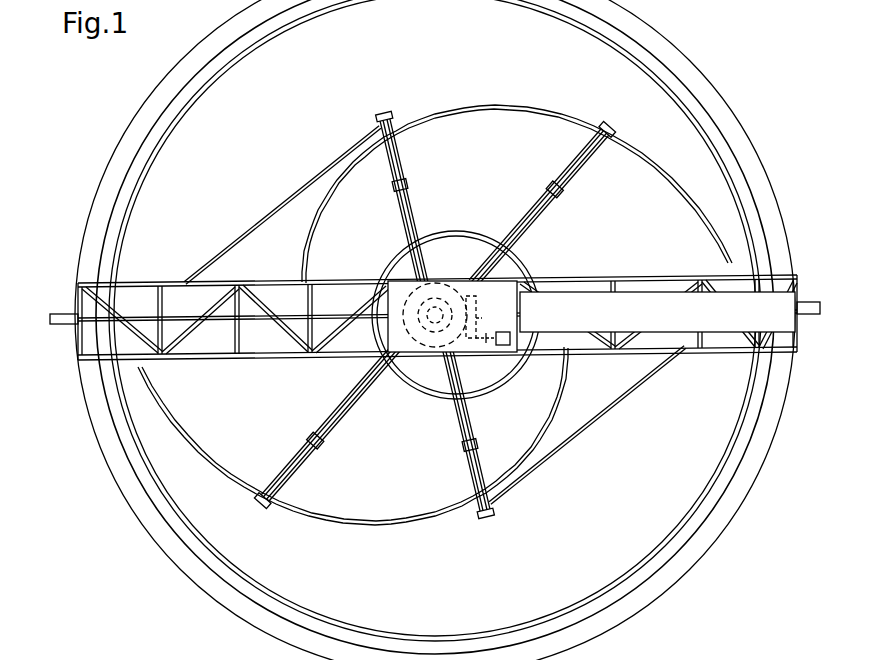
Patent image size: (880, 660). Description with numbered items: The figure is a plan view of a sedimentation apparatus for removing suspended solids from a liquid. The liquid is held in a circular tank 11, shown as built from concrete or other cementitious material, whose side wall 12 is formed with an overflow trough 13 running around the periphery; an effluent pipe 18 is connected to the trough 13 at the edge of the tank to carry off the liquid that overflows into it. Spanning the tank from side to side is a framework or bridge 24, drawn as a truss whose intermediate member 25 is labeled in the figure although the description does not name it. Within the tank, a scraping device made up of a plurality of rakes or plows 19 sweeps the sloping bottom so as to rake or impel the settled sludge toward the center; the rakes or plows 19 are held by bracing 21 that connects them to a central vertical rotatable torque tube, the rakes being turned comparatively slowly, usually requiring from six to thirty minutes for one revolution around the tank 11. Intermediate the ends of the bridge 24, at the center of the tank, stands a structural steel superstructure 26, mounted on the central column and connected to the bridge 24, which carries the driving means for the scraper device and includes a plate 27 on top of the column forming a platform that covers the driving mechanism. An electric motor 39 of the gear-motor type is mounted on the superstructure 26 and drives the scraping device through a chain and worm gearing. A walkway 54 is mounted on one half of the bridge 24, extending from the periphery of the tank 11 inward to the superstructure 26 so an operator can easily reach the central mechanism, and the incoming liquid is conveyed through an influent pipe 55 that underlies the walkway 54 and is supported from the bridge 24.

The tank 11 is at (666, 42).
The side wall 12 is at (160, 540).
The overflow trough 13 is at (143, 483).
The effluent pipe 18 is at (57, 306).
The rakes or plows 19 is at (525, 107).
The bracing 21 is at (326, 432).
The framework or bridge 24 is at (281, 284).
The bridge intermediate rail 25 is at (236, 337).
The superstructure 26 is at (418, 351).
The plate 27 is at (488, 314).
The electric motor 39 is at (503, 347).
The walkway 54 is at (657, 312).
The influent pipe 55 is at (814, 300).